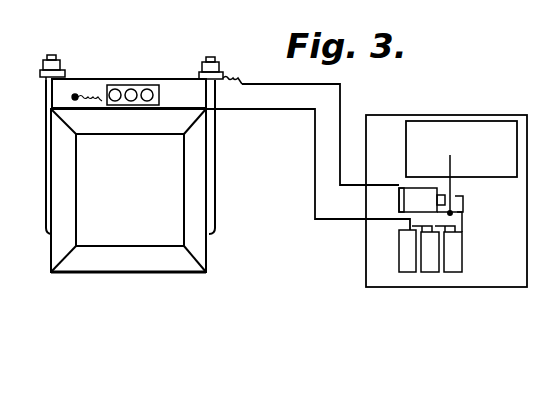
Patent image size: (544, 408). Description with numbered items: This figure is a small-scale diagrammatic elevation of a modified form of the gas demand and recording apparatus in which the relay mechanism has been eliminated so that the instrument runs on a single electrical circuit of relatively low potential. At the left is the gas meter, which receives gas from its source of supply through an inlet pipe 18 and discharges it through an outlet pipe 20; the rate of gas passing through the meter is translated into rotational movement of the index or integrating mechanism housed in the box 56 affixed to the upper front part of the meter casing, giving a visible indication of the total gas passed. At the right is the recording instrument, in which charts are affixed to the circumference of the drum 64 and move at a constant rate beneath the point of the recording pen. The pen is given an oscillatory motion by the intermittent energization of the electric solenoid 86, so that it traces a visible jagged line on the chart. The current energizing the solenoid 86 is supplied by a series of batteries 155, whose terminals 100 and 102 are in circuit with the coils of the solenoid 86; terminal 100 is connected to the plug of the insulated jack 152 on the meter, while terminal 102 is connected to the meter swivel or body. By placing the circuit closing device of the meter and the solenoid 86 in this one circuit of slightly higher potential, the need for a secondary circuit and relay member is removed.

The inlet pipe 18 is at (58, 68).
The insulated jack 152 is at (78, 95).
The box 56 is at (139, 85).
The outlet pipe 20 is at (220, 70).
The terminal 102 is at (341, 98).
The terminal 100 is at (313, 134).
The drum 64 is at (486, 128).
The solenoid 86 is at (398, 204).
The batteries 155 is at (463, 250).